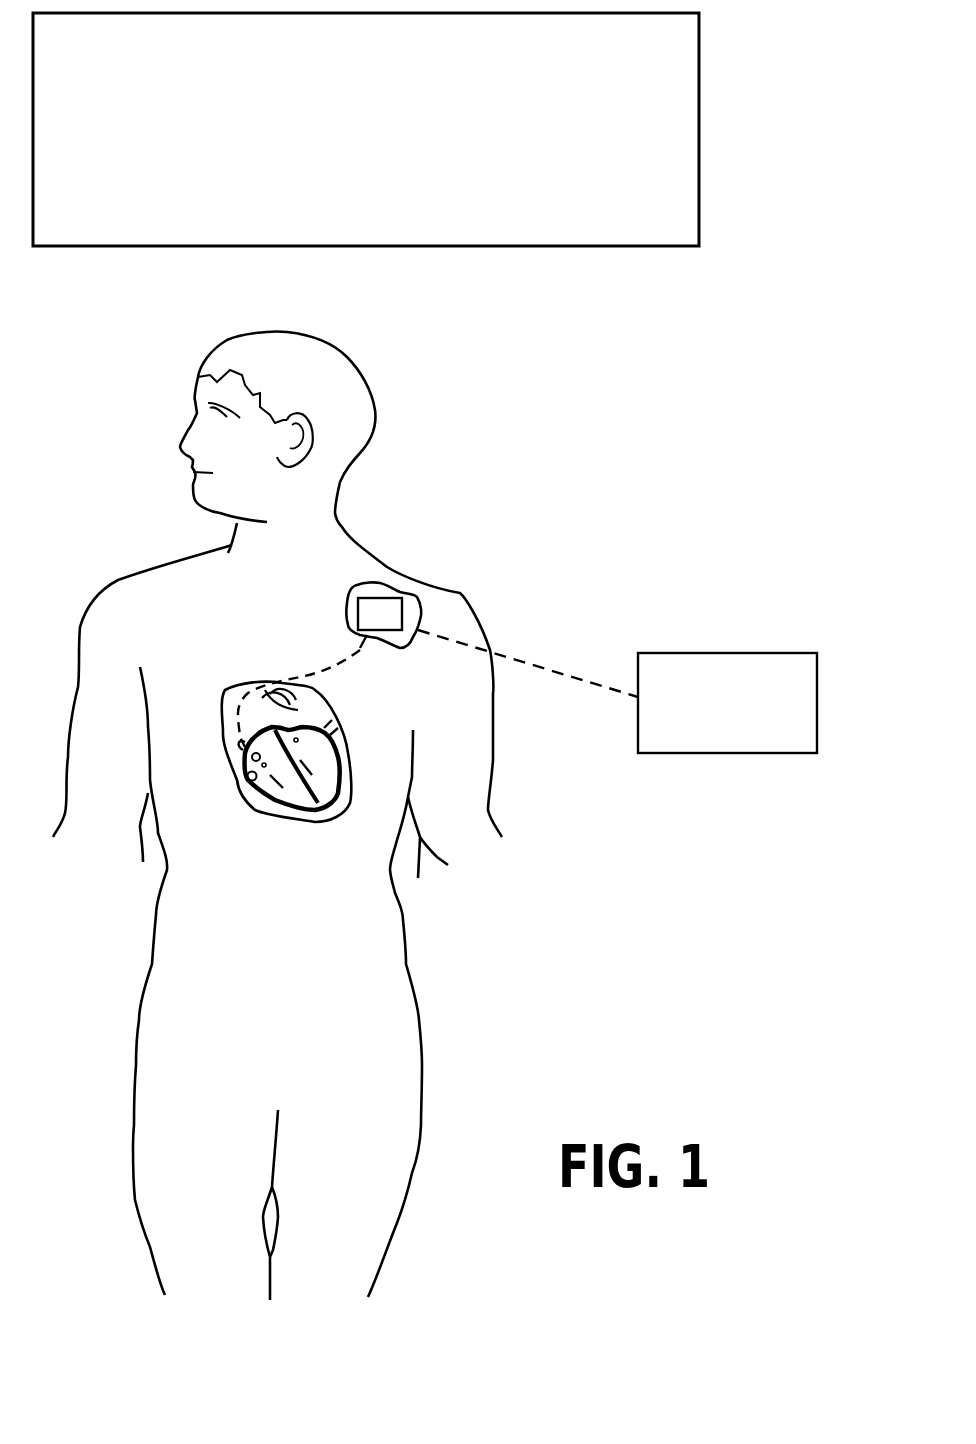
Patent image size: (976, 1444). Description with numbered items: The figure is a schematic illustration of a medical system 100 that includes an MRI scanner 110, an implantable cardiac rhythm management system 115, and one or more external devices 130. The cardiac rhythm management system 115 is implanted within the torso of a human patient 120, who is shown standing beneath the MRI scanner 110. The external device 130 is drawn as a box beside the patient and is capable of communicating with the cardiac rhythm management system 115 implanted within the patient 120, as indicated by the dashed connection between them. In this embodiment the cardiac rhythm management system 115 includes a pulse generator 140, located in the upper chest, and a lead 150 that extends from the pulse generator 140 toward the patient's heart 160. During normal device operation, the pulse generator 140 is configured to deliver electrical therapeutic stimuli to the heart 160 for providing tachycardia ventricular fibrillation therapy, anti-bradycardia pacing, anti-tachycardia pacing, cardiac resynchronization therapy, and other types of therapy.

The medical system 100 is at (841, 101).
The MRI scanner 110 is at (699, 223).
The implantable cardiac rhythm management system 115 is at (293, 648).
The human patient 120 is at (373, 455).
The external device 130 is at (725, 653).
The pulse generator 140 is at (403, 607).
The lead 150 is at (360, 649).
The heart 160 is at (322, 825).